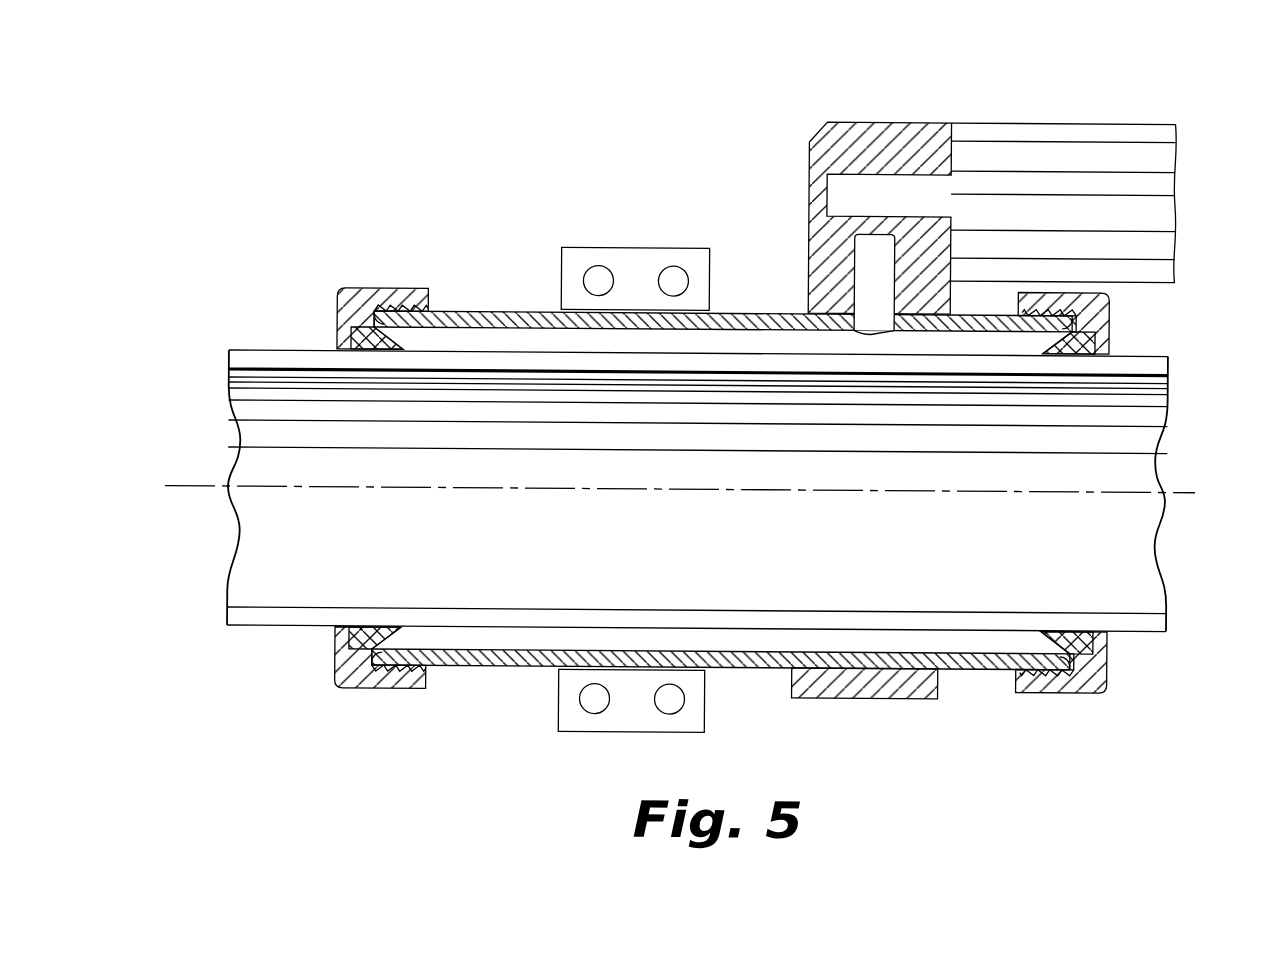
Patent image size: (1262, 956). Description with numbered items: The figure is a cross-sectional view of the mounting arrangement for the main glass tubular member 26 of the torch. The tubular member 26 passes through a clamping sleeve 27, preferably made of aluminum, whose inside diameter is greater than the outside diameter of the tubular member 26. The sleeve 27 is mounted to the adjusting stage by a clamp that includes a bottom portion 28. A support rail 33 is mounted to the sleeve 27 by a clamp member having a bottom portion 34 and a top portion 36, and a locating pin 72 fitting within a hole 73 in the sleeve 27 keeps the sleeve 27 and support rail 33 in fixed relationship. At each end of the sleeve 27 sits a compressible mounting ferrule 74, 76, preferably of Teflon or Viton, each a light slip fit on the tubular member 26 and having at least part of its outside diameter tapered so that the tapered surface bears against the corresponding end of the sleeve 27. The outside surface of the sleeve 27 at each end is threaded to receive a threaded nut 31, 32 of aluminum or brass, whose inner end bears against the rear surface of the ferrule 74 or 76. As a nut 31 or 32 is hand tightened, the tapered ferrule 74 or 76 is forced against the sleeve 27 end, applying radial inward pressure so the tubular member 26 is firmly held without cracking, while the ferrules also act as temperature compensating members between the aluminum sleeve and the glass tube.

The main glass tubular member 26 is at (1170, 348).
The clamping sleeve 27 is at (970, 667).
The bottom portion of clamp 28 is at (600, 245).
The threaded nut 31 is at (395, 684).
The threaded nut 32 is at (1085, 684).
The support rail 33 is at (1098, 129).
The bottom portion of clamp member 34 is at (892, 120).
The top portion of clamp member 36 is at (862, 690).
The locating pin 72 is at (870, 260).
The hole 73 is at (850, 296).
The compressible mounting ferrule 74 is at (350, 326).
The compressible mounting ferrule 76 is at (1105, 319).